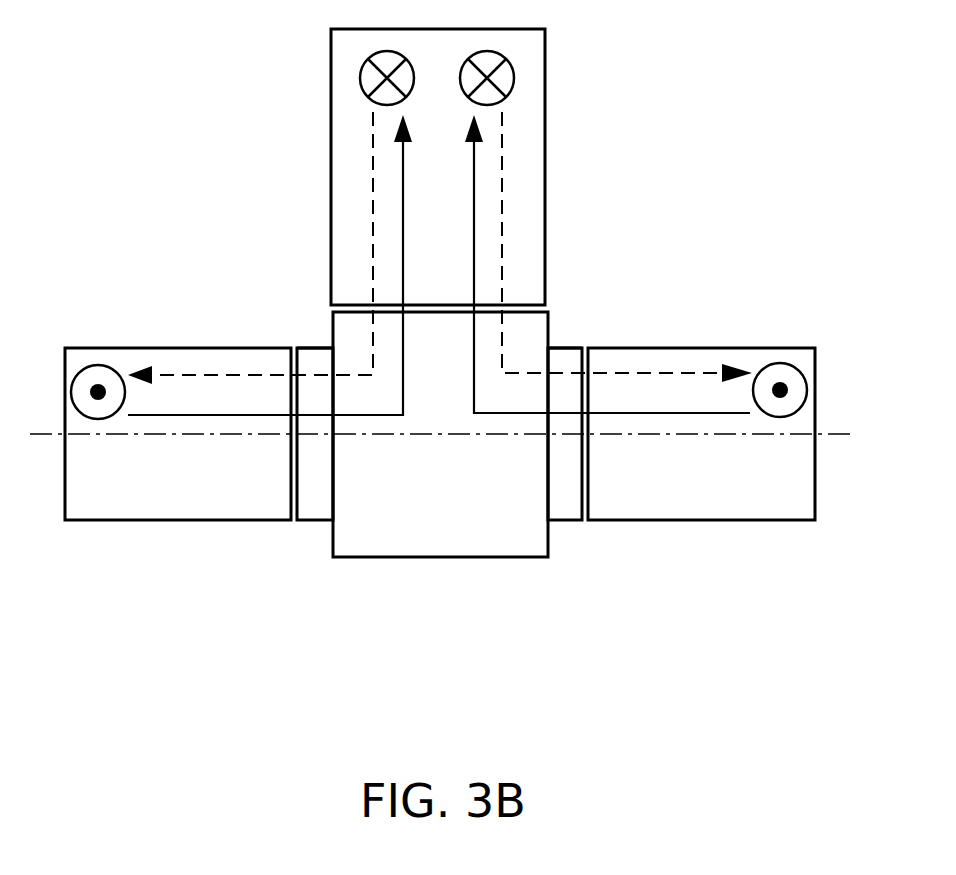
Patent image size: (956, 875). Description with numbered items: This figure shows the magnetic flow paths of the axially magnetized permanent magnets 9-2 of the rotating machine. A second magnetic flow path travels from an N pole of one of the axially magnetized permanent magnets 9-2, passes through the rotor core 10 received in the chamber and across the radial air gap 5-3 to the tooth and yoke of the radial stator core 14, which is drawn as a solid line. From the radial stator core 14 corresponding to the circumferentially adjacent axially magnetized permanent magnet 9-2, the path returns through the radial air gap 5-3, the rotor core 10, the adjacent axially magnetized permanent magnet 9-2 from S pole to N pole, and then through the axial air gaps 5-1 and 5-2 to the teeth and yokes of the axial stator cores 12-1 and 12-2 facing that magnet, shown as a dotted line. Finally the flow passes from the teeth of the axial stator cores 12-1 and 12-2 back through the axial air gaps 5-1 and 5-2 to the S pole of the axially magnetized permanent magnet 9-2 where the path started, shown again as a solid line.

The radial stator core 14 is at (532, 163).
The rotor core 10 is at (440, 540).
The radial air gap 5-3 is at (545, 305).
The axial air gap 5-1 is at (295, 520).
The axial air gap 5-2 is at (585, 520).
The axially magnetized permanent magnet 9-2 is at (313, 360).
The axial stator core 12-1 is at (175, 503).
The axial stator core 12-2 is at (702, 500).